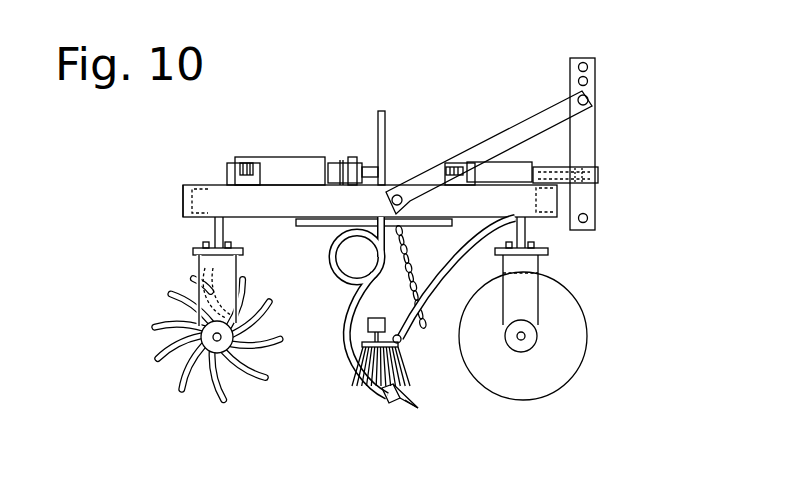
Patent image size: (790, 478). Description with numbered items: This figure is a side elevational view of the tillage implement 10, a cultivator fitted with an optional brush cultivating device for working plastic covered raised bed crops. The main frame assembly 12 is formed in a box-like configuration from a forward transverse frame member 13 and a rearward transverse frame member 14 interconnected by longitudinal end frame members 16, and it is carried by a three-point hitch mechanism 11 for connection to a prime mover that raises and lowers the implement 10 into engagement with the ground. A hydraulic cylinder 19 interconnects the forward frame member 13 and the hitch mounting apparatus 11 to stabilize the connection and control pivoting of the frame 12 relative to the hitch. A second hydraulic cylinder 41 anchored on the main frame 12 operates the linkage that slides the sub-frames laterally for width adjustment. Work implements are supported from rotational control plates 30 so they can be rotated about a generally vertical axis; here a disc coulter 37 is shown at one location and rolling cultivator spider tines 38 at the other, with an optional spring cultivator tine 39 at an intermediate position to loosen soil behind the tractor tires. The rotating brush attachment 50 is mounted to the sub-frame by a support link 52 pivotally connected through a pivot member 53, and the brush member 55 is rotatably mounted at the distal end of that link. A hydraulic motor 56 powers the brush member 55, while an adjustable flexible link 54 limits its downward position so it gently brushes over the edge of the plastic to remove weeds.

The tillage implement 10 is at (360, 96).
The three-point hitch mechanism 11 is at (597, 120).
The main frame assembly 12 is at (183, 188).
The forward transverse frame member 13 is at (567, 195).
The rearward transverse frame member 14 is at (183, 200).
The longitudinal end frame member 16 is at (237, 200).
The hydraulic cylinder 19 is at (492, 163).
The rotational control plate 30 is at (193, 249).
The disc coulter 37 is at (228, 238).
The rolling cultivator spider tines 38 is at (185, 370).
The spring cultivator tine 39 is at (392, 412).
The hydraulic cylinder 41 is at (272, 165).
The rotating brush attachment 50 is at (330, 380).
The support link 52 is at (425, 330).
The pivot member 53 is at (530, 222).
The flexible link 54 is at (402, 285).
The brush member 55 is at (412, 377).
The hydraulic motor 56 is at (347, 327).